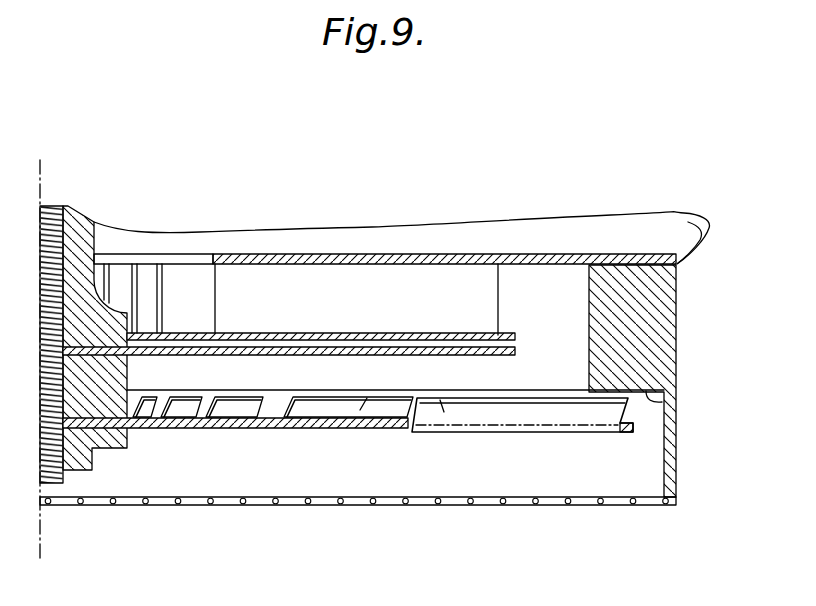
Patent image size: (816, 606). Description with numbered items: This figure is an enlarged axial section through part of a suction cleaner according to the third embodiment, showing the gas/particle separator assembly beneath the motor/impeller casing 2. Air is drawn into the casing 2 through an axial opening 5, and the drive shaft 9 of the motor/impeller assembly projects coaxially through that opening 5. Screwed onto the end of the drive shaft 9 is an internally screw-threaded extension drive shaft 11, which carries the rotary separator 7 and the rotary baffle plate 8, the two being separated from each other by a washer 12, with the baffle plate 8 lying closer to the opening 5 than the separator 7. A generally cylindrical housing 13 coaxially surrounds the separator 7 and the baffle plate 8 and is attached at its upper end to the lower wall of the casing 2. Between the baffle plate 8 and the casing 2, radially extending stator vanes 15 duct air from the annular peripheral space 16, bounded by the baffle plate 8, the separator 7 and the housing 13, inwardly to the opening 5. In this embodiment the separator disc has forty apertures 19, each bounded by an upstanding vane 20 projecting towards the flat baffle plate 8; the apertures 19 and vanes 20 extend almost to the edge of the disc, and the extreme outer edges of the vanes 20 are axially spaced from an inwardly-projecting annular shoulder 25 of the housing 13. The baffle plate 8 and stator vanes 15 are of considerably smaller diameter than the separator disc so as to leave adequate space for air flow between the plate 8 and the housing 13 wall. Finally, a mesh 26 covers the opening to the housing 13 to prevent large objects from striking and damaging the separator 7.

The casing 2 is at (691, 236).
The opening 5 is at (187, 257).
The rotary separator 7 is at (449, 253).
The rotary baffle plate 8 is at (505, 360).
The drive shaft 9 is at (50, 213).
The extension drive shaft 11 is at (63, 483).
The washer 12 is at (150, 432).
The housing 13 is at (676, 490).
The vanes 15 is at (360, 318).
The annular peripheral space 16 is at (572, 382).
The apertures 19 is at (547, 423).
The upstanding vanes 20 is at (444, 412).
The annular shoulder 25 is at (662, 402).
The mesh 26 is at (620, 502).